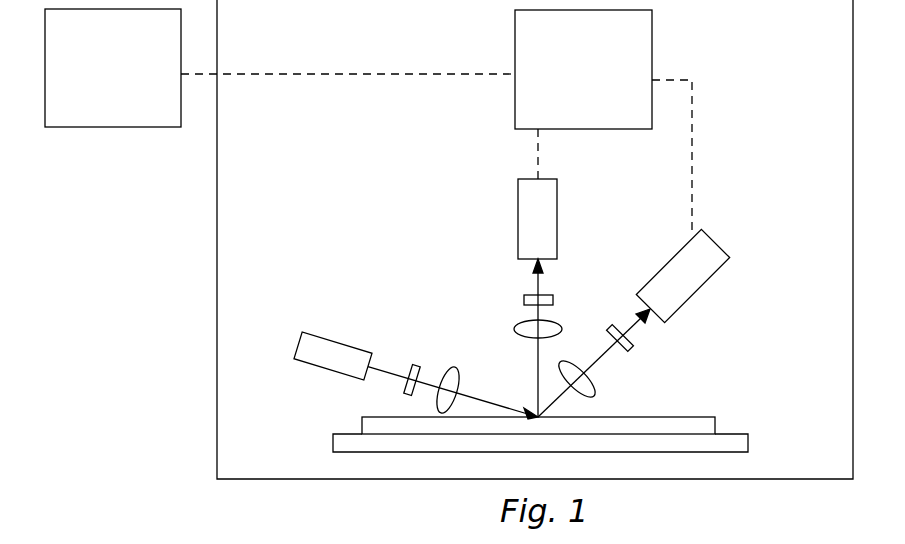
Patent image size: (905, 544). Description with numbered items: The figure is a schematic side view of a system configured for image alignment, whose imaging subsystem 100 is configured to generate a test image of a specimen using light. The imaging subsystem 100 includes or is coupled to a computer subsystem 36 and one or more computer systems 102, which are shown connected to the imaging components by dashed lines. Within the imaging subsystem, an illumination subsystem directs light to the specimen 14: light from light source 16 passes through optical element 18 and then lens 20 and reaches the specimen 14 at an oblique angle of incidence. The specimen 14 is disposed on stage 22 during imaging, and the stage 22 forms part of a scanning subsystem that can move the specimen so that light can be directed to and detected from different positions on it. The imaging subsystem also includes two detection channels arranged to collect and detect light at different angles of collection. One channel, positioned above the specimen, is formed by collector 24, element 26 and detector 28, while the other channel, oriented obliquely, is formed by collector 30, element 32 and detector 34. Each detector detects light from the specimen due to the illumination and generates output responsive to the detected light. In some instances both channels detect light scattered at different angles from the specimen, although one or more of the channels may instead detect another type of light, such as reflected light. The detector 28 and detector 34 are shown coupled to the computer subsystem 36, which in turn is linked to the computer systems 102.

The imaging subsystem 100 is at (500, 239).
The computer system 102 is at (96, 107).
The computer subsystem 36 is at (571, 110).
The detector 28 is at (508, 219).
The element 26 is at (510, 288).
The collector 24 is at (515, 318).
The light source 16 is at (308, 347).
The optical element 18 is at (436, 360).
The lens 20 is at (467, 375).
The specimen 14 is at (516, 411).
The stage 22 is at (512, 435).
The collector 30 is at (601, 388).
The element 32 is at (646, 352).
The detector 34 is at (700, 275).